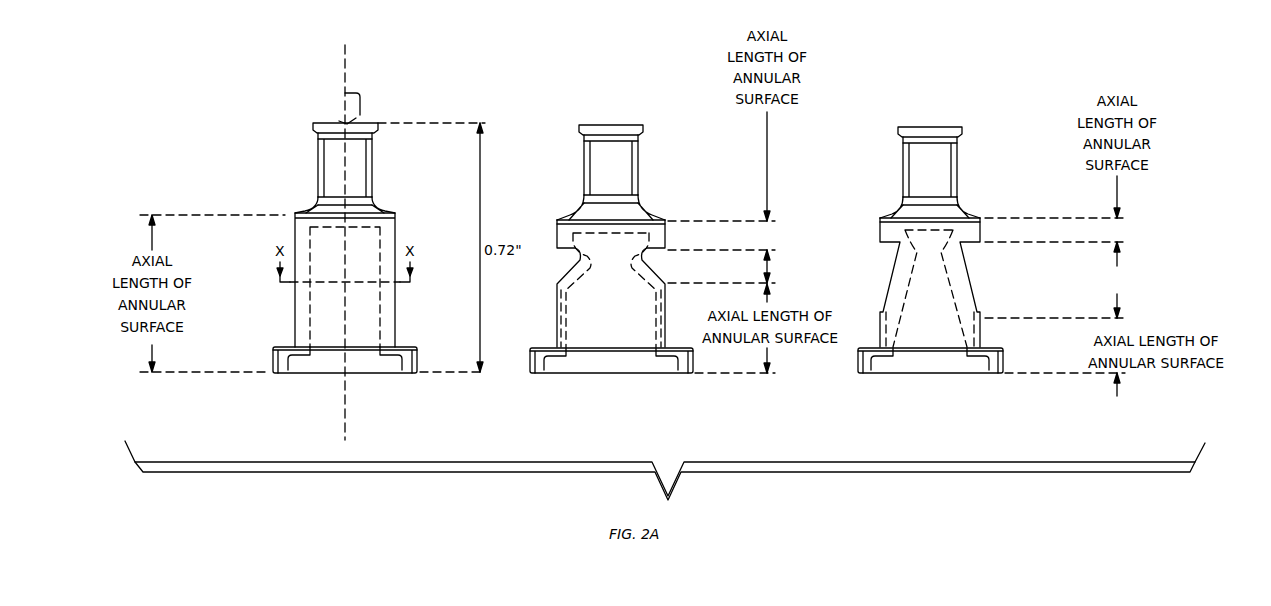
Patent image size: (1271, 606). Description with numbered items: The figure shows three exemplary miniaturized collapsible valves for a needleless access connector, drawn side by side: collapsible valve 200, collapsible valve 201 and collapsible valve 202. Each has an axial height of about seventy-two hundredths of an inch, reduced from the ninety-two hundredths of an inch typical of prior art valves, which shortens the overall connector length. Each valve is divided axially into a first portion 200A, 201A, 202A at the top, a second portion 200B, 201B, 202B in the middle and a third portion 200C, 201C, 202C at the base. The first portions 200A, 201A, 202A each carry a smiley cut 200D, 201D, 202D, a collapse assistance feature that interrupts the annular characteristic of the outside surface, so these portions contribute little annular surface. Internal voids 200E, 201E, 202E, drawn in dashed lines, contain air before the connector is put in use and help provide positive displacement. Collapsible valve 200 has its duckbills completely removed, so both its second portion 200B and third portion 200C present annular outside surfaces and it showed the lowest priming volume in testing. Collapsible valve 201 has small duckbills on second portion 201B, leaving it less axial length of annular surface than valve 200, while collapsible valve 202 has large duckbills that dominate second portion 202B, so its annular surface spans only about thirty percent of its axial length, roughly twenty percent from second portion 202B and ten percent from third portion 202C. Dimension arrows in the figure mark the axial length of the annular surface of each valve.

The collapsible valve 200 is at (336, 264).
The first portion 200A is at (342, 168).
The second portion 200B is at (272, 215).
The third portion 200C is at (272, 347).
The smiley cut 200D is at (374, 162).
The void 200E is at (332, 335).
The collapsible valve 201 is at (628, 255).
The first portion 201A is at (640, 162).
The second portion 201B is at (678, 347).
The third portion 201C is at (694, 350).
The smiley cut 201D is at (667, 215).
The void 201E is at (604, 333).
The collapsible valve 202 is at (967, 255).
The first portion 202A is at (964, 162).
The second portion 202B is at (1002, 220).
The third portion 202C is at (1007, 350).
The smiley cut 202D is at (990, 215).
The void 202E is at (915, 333).